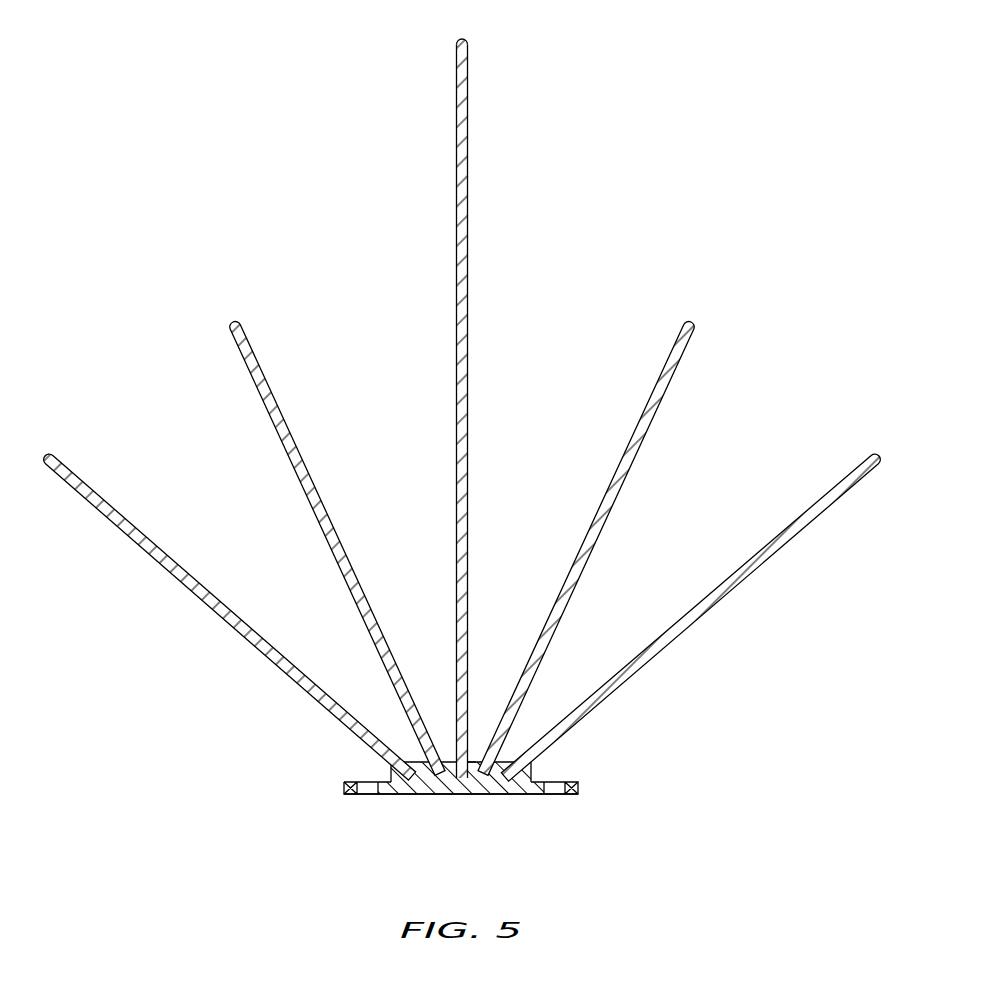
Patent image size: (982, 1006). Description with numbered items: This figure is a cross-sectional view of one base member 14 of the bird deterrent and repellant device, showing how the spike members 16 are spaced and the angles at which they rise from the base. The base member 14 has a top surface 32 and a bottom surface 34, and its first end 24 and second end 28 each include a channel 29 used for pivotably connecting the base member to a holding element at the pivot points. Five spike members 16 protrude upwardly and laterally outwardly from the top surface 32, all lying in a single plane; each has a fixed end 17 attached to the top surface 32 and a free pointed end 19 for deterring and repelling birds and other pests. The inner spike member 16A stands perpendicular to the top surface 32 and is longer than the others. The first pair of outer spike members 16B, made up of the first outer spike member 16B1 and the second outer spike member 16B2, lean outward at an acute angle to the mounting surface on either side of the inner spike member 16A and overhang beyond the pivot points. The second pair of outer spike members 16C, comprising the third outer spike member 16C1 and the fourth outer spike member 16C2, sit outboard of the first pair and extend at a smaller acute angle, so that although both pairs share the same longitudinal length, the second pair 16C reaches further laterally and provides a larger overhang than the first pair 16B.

The base member 14 is at (462, 440).
The spike members 16 is at (462, 392).
The inner spike member 16A is at (470, 390).
The first pair of outer spike members 16B is at (488, 548).
The first outer spike member 16B1 is at (279, 418).
The second outer spike member 16B2 is at (646, 420).
The second pair of outer spike members 16C is at (462, 607).
The third outer spike member 16C1 is at (83, 488).
The fourth outer spike member 16C2 is at (798, 527).
The fixed end 17 is at (451, 783).
The free pointed end 19 is at (459, 40).
The first end 24 is at (474, 760).
The second end 28 is at (578, 784).
The channel 29 is at (370, 795).
The top surface 32 is at (473, 760).
The bottom surface 34 is at (487, 795).